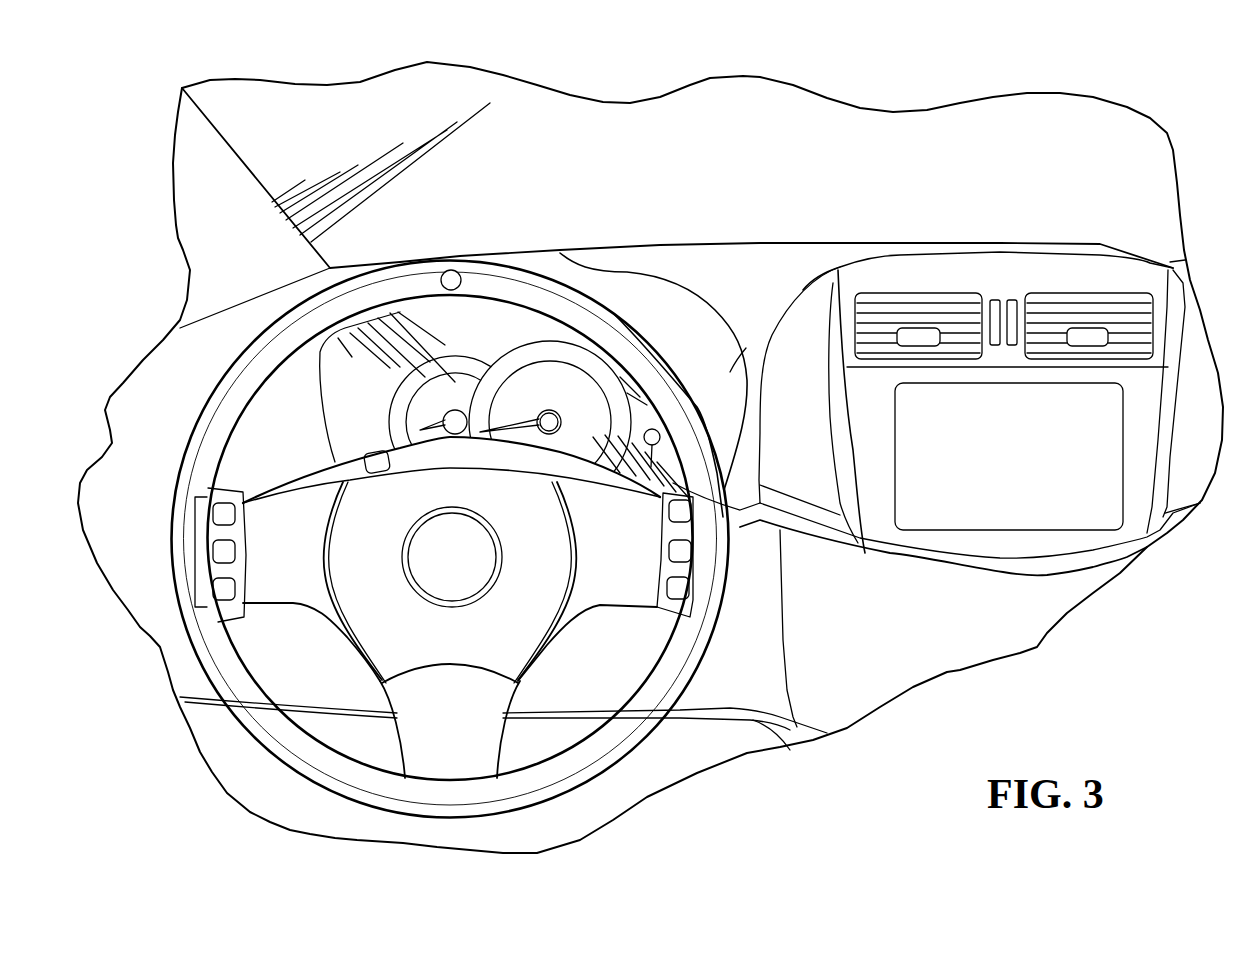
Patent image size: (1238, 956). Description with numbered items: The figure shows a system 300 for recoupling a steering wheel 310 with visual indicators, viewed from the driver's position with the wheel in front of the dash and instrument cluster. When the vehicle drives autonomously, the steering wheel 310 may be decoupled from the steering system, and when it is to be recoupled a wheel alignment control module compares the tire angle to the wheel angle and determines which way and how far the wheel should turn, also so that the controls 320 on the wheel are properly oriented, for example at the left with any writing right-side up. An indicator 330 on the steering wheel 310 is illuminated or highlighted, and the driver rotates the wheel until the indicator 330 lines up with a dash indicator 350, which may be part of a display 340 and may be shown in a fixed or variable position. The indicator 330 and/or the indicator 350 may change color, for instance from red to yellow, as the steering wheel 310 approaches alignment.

The system for recoupling a steering wheel with visual indicators 300 is at (141, 121).
The steering wheel 310 is at (620, 737).
The controls 320 is at (195, 547).
The indicator 330 is at (452, 270).
The display 340 is at (399, 433).
The dash indicator 350 is at (362, 452).